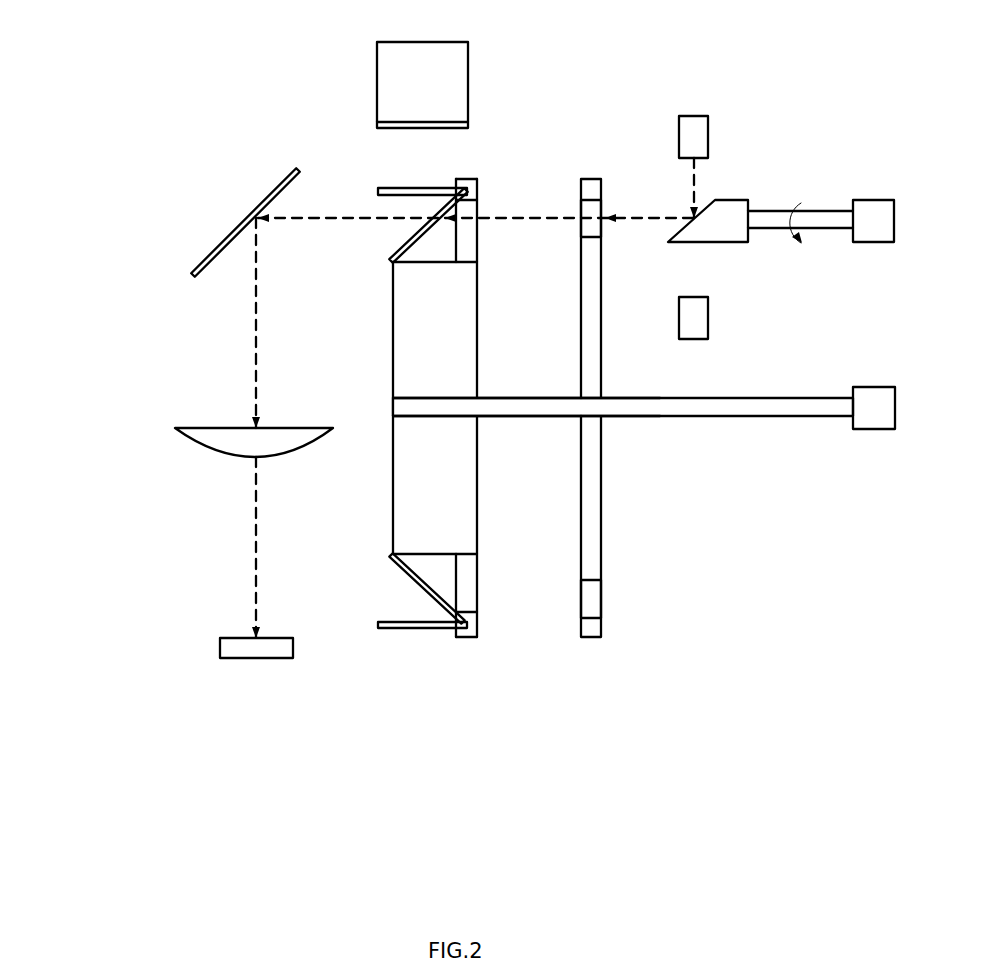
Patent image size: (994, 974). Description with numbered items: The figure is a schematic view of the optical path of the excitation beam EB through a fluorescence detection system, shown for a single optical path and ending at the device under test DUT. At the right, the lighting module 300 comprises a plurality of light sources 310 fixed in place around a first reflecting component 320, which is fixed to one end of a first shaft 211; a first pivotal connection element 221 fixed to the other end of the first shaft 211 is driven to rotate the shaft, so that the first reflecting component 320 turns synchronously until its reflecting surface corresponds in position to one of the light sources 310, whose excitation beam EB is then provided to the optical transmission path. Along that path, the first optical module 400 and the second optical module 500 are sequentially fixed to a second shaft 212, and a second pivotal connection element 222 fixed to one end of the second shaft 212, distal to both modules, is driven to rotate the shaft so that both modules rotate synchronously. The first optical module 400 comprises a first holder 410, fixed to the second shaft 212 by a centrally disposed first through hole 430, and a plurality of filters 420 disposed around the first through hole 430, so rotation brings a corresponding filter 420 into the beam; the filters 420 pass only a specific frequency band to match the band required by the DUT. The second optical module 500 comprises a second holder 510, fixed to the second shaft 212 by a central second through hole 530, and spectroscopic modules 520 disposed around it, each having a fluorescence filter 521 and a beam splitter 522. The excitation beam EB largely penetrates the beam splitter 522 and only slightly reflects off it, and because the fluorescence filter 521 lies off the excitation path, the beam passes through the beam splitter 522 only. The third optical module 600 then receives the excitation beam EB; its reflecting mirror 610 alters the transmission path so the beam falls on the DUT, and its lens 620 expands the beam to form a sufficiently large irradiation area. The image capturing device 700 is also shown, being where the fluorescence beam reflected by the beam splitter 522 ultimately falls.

The image capturing device 700 is at (377, 73).
The first optical module 400 is at (593, 98).
The first holder 410 is at (592, 535).
The filters 420 is at (602, 203).
The first through hole 430 is at (603, 417).
The lighting module 300 is at (768, 86).
The light sources 310 is at (695, 115).
The first reflecting component 320 is at (732, 198).
The first shaft 211 is at (833, 212).
The first pivotal connection element 221 is at (868, 200).
The second shaft 212 is at (737, 417).
The second pivotal connection element 222 is at (873, 429).
The second optical module 500 is at (440, 748).
The second holder 510 is at (477, 337).
The spectroscopic modules 520 is at (446, 412).
The fluorescence filter 521 is at (435, 187).
The beam splitter 522 is at (475, 208).
The second through hole 530 is at (477, 417).
The third optical module 600 is at (117, 300).
The reflecting mirror 610 is at (220, 242).
The lens 620 is at (222, 427).
The excitation beam EB is at (257, 360).
The device under test DUT is at (242, 660).